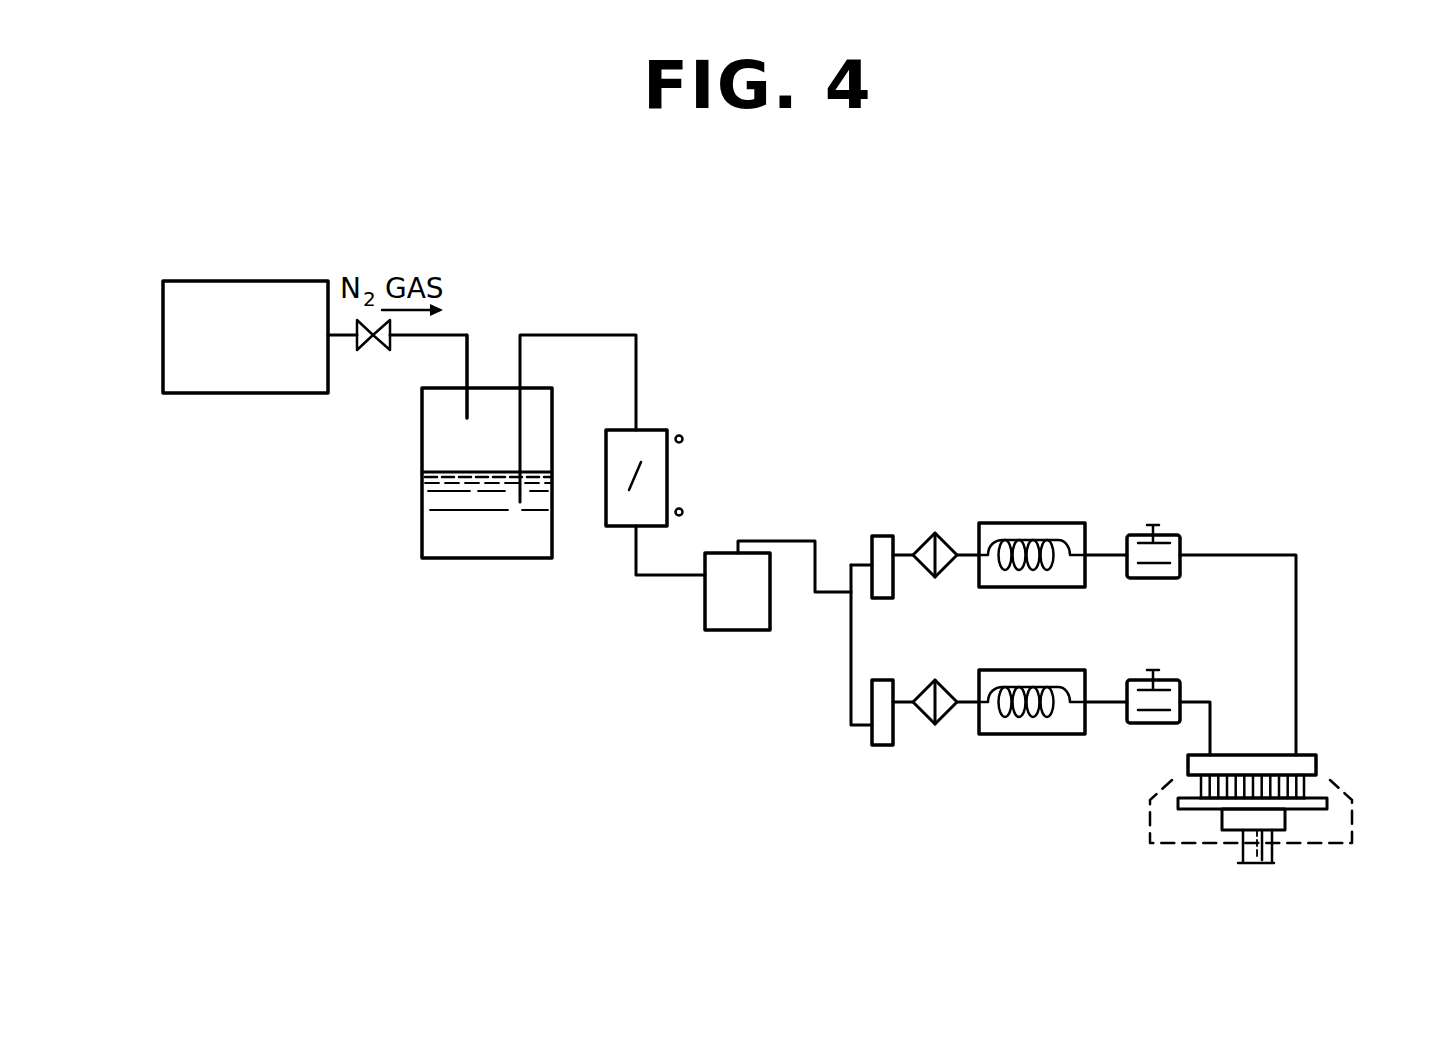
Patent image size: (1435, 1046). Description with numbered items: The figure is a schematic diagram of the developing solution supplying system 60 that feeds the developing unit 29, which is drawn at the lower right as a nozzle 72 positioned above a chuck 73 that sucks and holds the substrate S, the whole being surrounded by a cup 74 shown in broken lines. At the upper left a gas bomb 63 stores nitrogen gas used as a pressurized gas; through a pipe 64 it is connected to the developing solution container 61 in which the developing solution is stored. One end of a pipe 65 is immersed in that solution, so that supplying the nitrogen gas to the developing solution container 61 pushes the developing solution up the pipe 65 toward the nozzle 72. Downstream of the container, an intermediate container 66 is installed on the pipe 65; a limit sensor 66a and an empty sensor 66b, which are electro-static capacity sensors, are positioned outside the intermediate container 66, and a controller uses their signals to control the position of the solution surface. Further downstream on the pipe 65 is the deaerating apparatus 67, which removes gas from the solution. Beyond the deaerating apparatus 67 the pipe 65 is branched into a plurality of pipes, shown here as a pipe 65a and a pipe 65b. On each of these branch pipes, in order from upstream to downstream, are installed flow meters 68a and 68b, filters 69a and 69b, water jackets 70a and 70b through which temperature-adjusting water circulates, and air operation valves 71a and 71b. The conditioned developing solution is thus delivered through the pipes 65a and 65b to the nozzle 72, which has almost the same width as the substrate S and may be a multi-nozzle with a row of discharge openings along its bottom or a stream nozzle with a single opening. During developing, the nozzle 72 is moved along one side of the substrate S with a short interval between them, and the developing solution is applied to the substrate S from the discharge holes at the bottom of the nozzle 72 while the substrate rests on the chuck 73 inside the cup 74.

The gas bomb 63 is at (238, 281).
The pipe 64 is at (463, 335).
The developing solution container 61 is at (422, 520).
The pipe 65 is at (617, 335).
The intermediate container 66 is at (606, 460).
The limit sensor 66a is at (690, 437).
The empty sensor 66b is at (688, 509).
The deaerating apparatus 67 is at (705, 610).
The pipe 65a is at (853, 565).
The pipe 65b is at (851, 692).
The flow meter 68a is at (884, 536).
The flow meter 68b is at (884, 680).
The filter 69a is at (950, 540).
The filter 69b is at (948, 690).
The water jacket 70a is at (1040, 523).
The water jacket 70b is at (1042, 670).
The air operation valve 71a is at (1173, 532).
The air operation valve 71b is at (1165, 676).
The developing solution supplying system 60 is at (1155, 465).
The processing unit 29 is at (1291, 784).
The nozzle 72 is at (1316, 765).
The chuck 73 is at (1230, 830).
The cup 74 is at (1355, 825).
The substrate S is at (1318, 812).